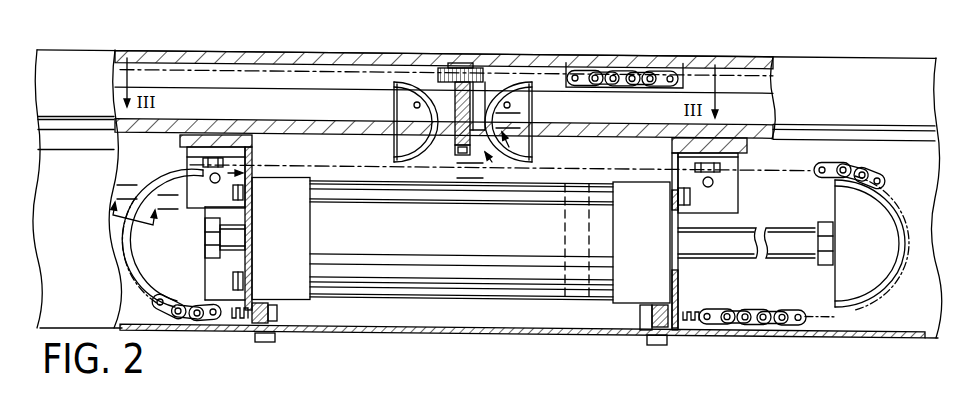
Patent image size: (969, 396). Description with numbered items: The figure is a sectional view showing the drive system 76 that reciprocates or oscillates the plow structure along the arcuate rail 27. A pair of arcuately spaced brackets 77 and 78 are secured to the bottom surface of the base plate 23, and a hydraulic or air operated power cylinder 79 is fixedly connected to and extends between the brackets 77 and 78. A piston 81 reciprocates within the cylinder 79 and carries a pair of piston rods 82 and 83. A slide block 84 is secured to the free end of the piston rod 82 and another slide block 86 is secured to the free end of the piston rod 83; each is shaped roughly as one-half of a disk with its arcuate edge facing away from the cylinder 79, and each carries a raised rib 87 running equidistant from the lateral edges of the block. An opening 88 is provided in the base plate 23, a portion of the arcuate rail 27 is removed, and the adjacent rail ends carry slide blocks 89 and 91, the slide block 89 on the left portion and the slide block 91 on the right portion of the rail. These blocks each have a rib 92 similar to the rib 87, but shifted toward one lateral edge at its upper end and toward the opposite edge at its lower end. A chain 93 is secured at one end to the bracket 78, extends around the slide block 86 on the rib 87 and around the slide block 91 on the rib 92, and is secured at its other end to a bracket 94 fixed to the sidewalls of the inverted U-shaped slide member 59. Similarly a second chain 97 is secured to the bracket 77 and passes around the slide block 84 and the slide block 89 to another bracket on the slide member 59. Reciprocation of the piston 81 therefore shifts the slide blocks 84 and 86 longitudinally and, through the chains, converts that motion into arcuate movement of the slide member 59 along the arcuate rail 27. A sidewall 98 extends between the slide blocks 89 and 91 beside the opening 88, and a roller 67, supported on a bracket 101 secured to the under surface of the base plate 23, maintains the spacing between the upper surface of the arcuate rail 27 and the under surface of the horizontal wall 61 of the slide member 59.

The base plate 23 is at (318, 127).
The arcuate rail 27 is at (298, 103).
The slide member 59 is at (410, 52).
The horizontal wall 61 is at (493, 55).
The roller 67 is at (457, 75).
The drive system 76 is at (381, 305).
The bracket 77 is at (200, 173).
The bracket 78 is at (696, 176).
The power cylinder 79 is at (448, 283).
The piston 81 is at (573, 290).
The piston rod 82 is at (237, 242).
The piston rod 83 is at (722, 248).
The slide block 84 is at (150, 258).
The slide block 86 is at (865, 215).
The raised rib 87 is at (132, 233).
The opening 88 is at (443, 133).
The slide block 89 is at (405, 140).
The slide block 91 is at (525, 145).
The rib 92 is at (400, 80).
The chain 93 is at (750, 325).
The bracket 94 is at (665, 72).
The second chain 97 is at (167, 318).
The sidewall 98 is at (478, 98).
The bracket 101 is at (457, 135).